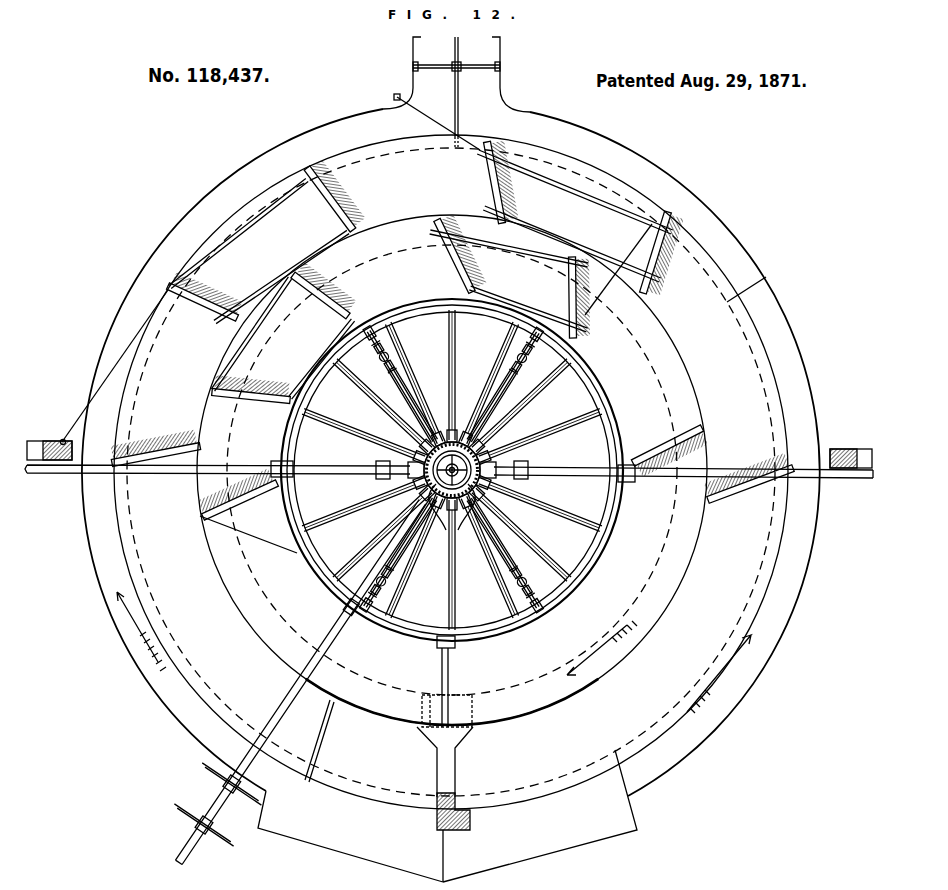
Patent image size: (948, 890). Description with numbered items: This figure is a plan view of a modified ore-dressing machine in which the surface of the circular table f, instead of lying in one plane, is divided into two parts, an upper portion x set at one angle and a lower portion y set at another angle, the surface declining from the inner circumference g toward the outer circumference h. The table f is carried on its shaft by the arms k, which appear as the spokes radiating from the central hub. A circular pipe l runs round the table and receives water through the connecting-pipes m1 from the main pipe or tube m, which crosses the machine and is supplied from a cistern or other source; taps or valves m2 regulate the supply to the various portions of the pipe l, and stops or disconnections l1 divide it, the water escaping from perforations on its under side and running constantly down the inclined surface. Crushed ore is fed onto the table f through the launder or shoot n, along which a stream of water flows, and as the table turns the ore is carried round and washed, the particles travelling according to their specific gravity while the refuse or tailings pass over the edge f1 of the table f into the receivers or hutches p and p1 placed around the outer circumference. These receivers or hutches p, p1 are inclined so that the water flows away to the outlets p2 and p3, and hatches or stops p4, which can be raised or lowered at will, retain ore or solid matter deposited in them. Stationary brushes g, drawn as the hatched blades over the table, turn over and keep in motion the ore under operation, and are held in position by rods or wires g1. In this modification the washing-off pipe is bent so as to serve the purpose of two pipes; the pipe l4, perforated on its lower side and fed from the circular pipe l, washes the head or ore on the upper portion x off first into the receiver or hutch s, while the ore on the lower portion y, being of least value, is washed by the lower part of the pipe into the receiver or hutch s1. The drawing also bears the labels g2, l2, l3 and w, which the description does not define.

The receiver or hutch p is at (451, 452).
The receiver or hutch p1 is at (442, 463).
The outlet p2 is at (502, 74).
The outlet p3 is at (420, 92).
The hatches or stops p4 is at (456, 60).
The outer circumference h is at (451, 467).
The lower portion of the table y is at (457, 459).
The upper portion of the table x is at (452, 470).
The stationary brush g is at (451, 347).
The rods or wires g1 is at (387, 296).
The gate plate g2 is at (267, 626).
The circular table f is at (262, 369).
The edge of the table f1 is at (391, 335).
The arms k is at (451, 470).
The circular pipe l is at (452, 473).
The stops or disconnections l1 is at (480, 448).
The rim junction of rod n l2 is at (337, 601).
The lower rod l3 is at (447, 687).
The pipe or tube l4 is at (445, 804).
The main pipe or tube m is at (449, 466).
The connecting-pipes m1 is at (451, 469).
The taps or valves m2 is at (454, 466).
The launder or shoot n is at (299, 682).
The receiver or hutch s is at (540, 816).
The receiver or hutch s1 is at (350, 791).
The shaft bearings w is at (449, 454).